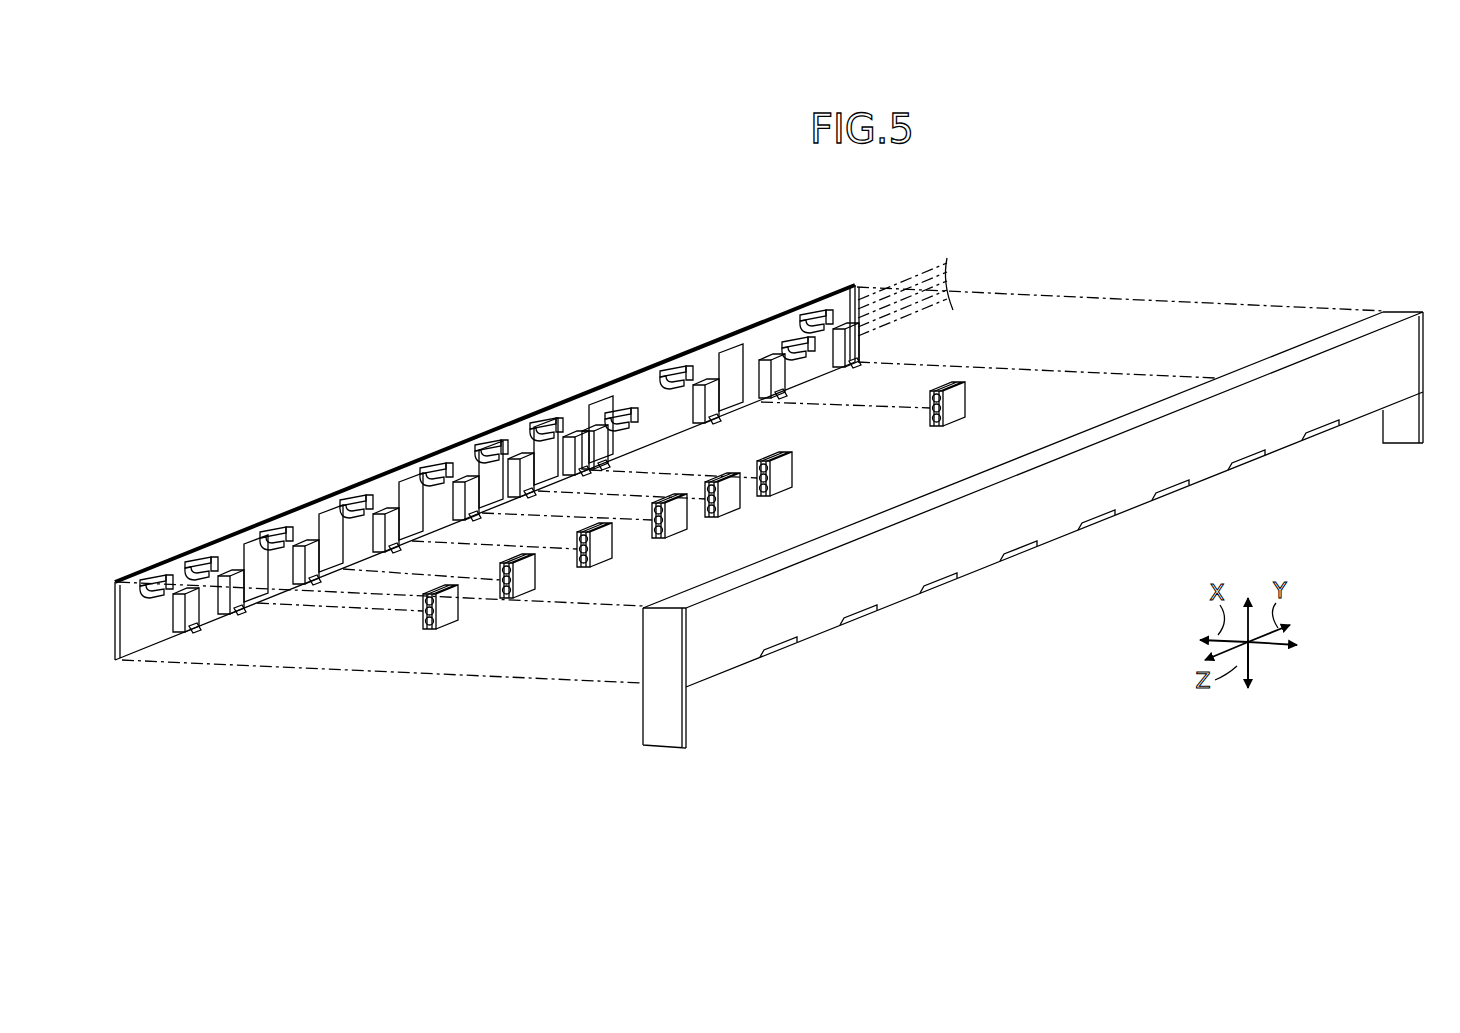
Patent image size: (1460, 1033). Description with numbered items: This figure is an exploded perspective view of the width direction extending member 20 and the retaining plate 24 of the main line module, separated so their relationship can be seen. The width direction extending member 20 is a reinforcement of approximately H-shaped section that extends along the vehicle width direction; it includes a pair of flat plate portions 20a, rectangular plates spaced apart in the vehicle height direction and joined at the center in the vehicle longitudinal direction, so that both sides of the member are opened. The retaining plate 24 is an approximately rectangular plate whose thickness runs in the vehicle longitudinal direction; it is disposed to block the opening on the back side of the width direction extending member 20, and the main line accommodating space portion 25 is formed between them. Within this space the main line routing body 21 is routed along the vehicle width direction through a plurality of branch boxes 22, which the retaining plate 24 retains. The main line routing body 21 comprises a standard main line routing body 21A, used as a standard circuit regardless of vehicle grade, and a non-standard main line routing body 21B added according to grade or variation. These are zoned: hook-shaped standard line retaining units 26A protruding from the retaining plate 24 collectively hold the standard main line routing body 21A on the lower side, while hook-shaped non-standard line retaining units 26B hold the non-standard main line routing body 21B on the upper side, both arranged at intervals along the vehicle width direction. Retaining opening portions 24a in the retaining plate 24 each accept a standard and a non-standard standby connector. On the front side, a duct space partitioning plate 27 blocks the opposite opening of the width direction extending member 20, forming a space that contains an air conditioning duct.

The width direction extending member 20 is at (1385, 310).
The flat plate portions 20a is at (873, 527).
The main line routing body 21 is at (972, 272).
The standard main line routing body 21A is at (936, 317).
The non-standard main line routing body 21B is at (919, 265).
The branch box 22 is at (462, 606).
The retaining plate 24 is at (854, 283).
The retaining opening portion 24a is at (242, 572).
The main line accommodating space portion 25 is at (1274, 350).
The standard line retaining unit 26A is at (201, 634).
The non-standard line retaining unit 26B is at (157, 583).
The duct space partitioning plate 27 is at (1325, 412).